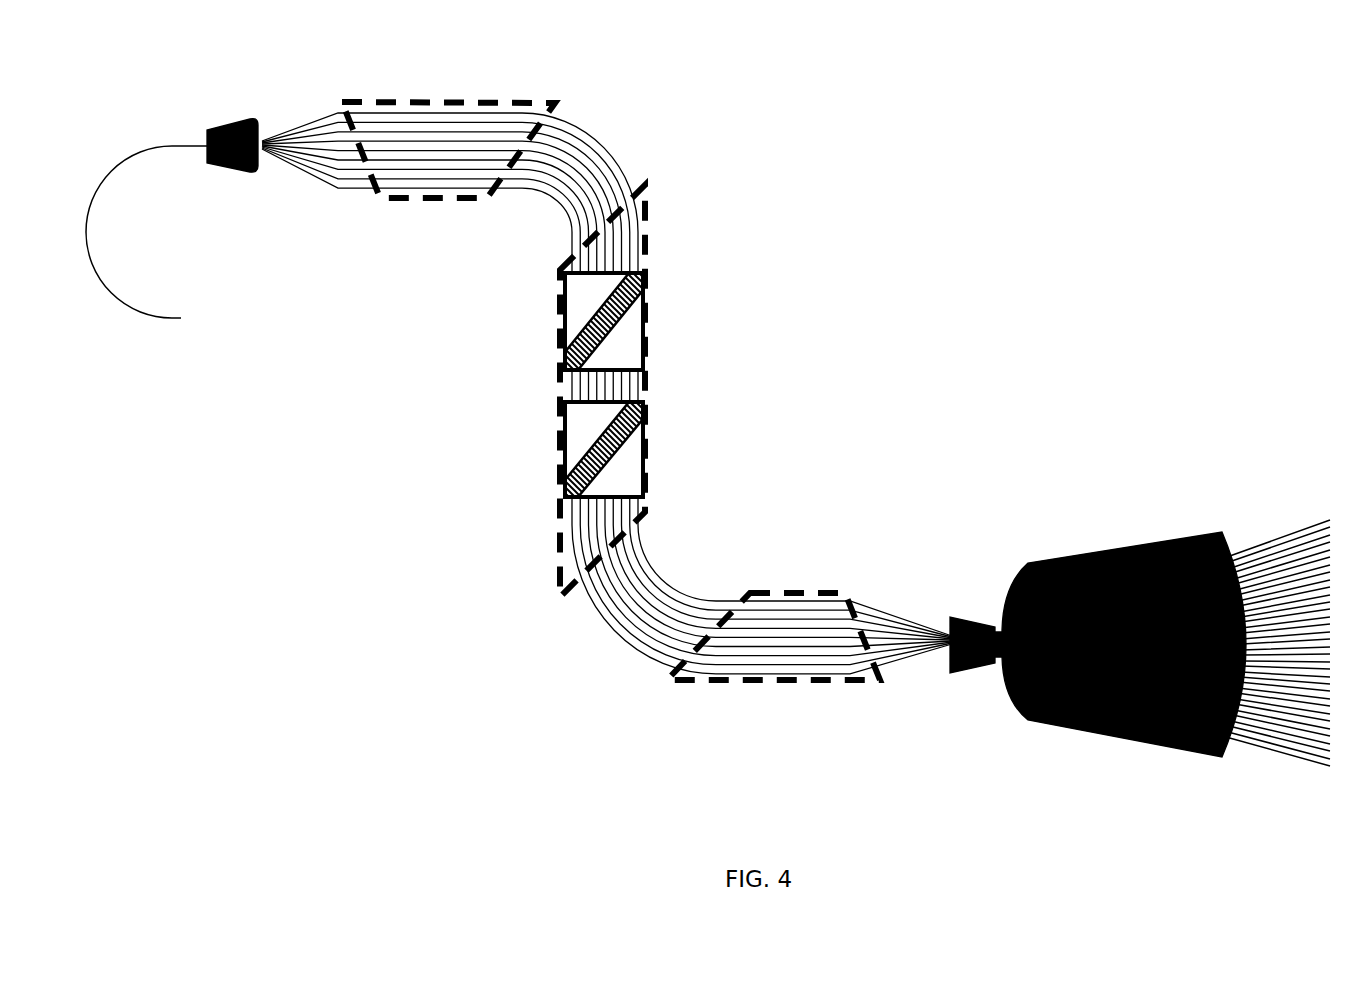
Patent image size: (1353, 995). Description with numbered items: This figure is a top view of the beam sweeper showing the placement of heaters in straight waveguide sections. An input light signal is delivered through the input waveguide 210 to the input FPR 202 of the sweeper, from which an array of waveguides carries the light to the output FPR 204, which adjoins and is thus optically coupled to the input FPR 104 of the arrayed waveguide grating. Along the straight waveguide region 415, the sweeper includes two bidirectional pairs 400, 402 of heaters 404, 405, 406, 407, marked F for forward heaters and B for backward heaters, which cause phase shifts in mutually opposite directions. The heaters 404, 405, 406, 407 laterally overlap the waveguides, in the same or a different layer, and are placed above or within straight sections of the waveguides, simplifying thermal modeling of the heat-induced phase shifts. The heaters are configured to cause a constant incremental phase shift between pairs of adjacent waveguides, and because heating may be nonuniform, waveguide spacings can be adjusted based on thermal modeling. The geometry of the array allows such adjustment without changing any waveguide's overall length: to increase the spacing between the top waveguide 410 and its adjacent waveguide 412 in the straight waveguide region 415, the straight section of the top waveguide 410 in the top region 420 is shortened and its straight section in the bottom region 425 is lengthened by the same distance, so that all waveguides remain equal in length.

The input FPR 104 is at (1098, 555).
The input FPR 202 is at (223, 165).
The output FPR 204 is at (967, 617).
The input waveguide 210 is at (140, 308).
The bidirectional pair of heaters 400 is at (639, 300).
The bidirectional pair of heaters 402 is at (630, 431).
The heater 404 is at (565, 310).
The heater 405 is at (628, 330).
The heater 406 is at (565, 440).
The heater 407 is at (637, 460).
The top waveguide 410 is at (607, 147).
The adjacent waveguide 412 is at (620, 167).
The straight waveguide region 415 is at (560, 545).
The top region 420 is at (483, 101).
The bottom region 425 is at (815, 593).